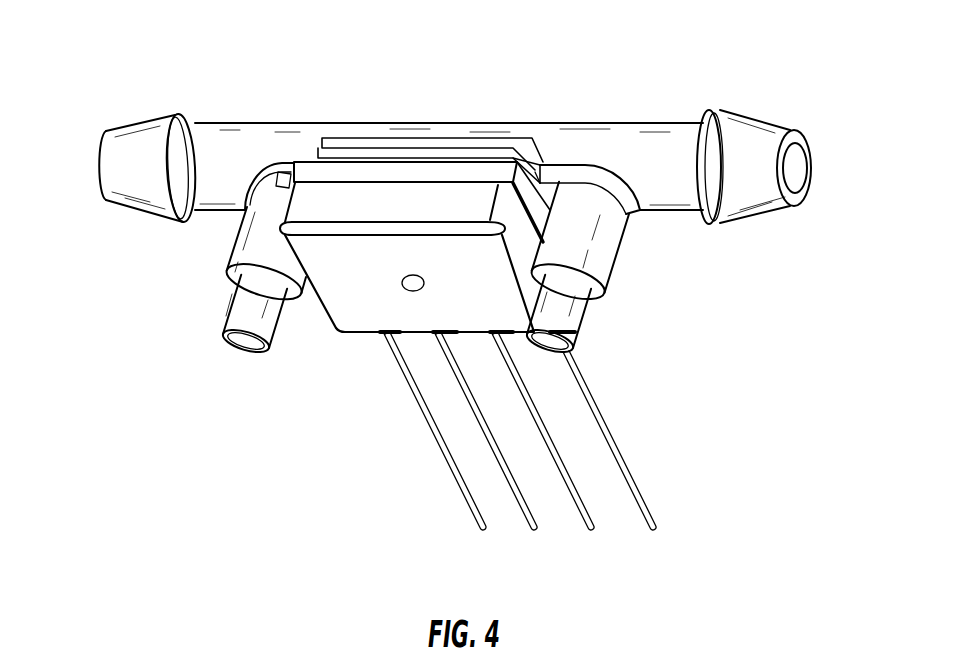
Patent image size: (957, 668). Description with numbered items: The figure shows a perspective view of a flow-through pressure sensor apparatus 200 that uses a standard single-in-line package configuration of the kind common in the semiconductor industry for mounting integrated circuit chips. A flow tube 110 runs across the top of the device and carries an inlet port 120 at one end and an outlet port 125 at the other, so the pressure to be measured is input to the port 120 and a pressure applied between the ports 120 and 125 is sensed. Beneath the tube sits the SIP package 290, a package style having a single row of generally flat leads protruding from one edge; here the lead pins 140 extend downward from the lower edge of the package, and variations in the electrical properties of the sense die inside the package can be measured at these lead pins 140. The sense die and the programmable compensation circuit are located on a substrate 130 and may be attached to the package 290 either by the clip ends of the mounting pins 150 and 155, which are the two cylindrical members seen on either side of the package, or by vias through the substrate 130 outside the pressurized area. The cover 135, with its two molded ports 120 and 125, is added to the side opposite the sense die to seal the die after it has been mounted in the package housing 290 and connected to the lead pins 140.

The flow-through pressure sensor apparatus 200 is at (186, 44).
The flow tube 110 is at (372, 122).
The inlet port 120 is at (100, 161).
The outlet port 125 is at (797, 170).
The substrate 130 is at (480, 148).
The cover 135 is at (363, 315).
The lead pins 140 is at (616, 438).
The mounting pin 150 is at (238, 317).
The mounting pin 155 is at (568, 328).
The SIP package housing 290 is at (301, 392).